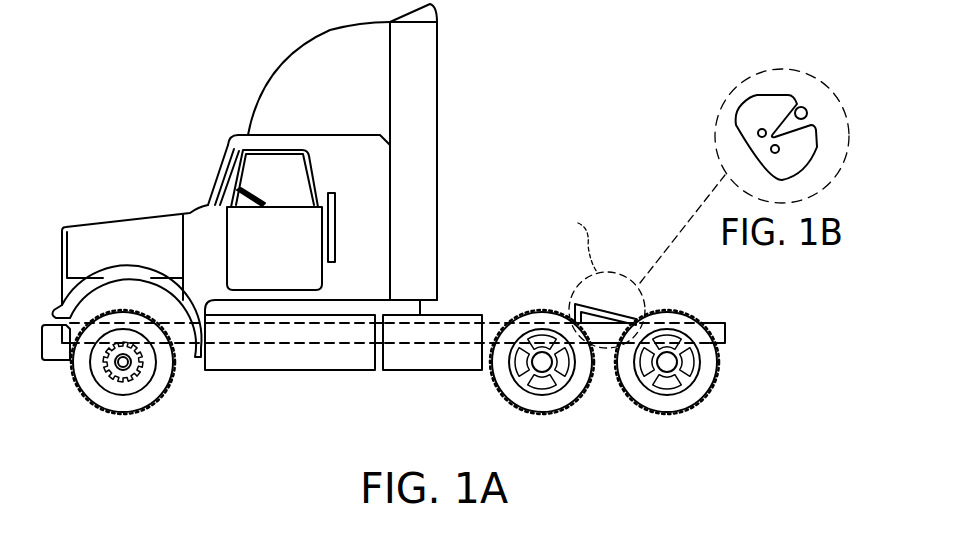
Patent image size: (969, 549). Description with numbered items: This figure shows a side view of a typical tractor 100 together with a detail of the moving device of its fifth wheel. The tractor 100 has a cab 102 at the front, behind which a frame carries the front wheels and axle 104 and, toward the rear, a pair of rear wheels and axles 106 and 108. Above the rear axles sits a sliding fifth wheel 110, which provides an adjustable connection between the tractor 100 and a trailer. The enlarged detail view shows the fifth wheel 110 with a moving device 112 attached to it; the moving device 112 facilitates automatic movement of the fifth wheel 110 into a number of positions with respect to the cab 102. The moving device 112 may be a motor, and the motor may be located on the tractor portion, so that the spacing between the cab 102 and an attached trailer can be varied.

In FIG. 1A, the tractor 100 is at (494, 90).
In FIG. 1A, the cab 102 is at (190, 191).
In FIG. 1A, the front wheels and axle 104 is at (179, 405).
In FIG. 1A, the rear wheels and axles 106 is at (473, 405).
In FIG. 1A, the rear wheels and axles 108 is at (613, 403).
In FIG. 1A, the sliding fifth wheel 110 is at (614, 288).
In FIG. 1B, the sliding fifth wheel 110 is at (760, 110).
In FIG. 1B, the moving device 112 is at (803, 107).